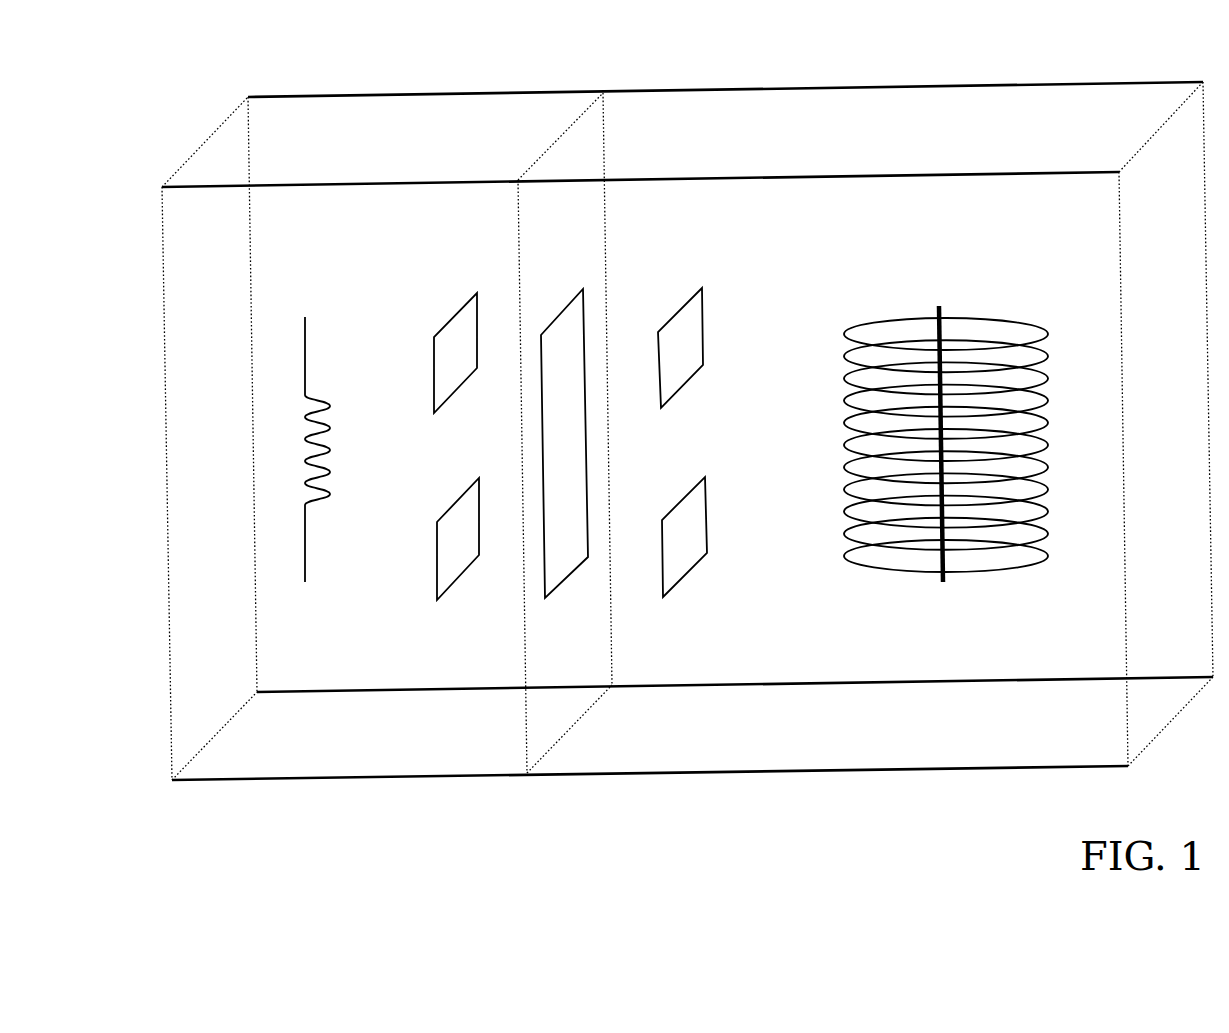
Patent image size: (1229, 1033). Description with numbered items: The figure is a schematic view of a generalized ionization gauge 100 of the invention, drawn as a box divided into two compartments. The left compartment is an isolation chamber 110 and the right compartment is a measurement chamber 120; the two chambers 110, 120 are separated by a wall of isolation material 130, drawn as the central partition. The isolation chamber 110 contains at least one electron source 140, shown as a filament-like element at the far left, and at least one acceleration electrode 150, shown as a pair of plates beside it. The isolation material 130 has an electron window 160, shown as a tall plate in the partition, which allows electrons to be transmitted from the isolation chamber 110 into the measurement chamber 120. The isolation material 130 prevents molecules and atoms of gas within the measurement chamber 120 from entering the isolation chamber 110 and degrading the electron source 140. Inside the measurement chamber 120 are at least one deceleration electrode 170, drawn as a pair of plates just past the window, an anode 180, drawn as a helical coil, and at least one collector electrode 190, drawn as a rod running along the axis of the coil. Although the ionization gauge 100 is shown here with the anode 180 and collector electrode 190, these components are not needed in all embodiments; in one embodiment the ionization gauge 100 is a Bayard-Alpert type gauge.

The ionization gauge 100 is at (913, 62).
The isolation chamber 110 is at (278, 617).
The measurement chamber 120 is at (902, 652).
The isolation material 130 is at (558, 720).
The electron source 140 is at (307, 518).
The acceleration electrode 150 is at (457, 370).
The electron window 160 is at (565, 453).
The deceleration electrode 170 is at (682, 357).
The anode 180 is at (1045, 552).
The collector electrode 190 is at (945, 583).